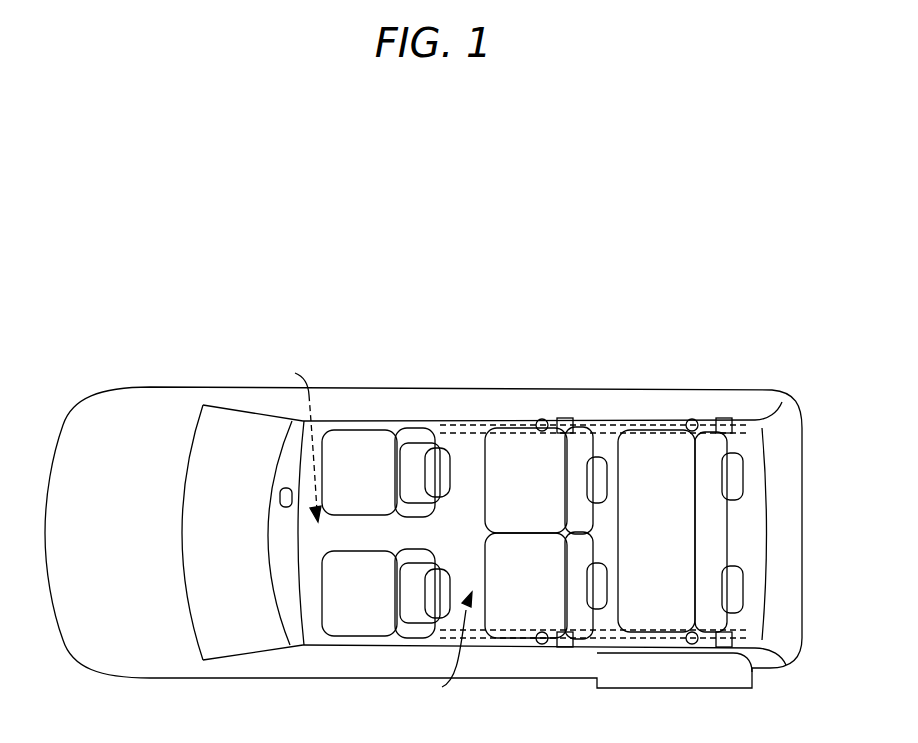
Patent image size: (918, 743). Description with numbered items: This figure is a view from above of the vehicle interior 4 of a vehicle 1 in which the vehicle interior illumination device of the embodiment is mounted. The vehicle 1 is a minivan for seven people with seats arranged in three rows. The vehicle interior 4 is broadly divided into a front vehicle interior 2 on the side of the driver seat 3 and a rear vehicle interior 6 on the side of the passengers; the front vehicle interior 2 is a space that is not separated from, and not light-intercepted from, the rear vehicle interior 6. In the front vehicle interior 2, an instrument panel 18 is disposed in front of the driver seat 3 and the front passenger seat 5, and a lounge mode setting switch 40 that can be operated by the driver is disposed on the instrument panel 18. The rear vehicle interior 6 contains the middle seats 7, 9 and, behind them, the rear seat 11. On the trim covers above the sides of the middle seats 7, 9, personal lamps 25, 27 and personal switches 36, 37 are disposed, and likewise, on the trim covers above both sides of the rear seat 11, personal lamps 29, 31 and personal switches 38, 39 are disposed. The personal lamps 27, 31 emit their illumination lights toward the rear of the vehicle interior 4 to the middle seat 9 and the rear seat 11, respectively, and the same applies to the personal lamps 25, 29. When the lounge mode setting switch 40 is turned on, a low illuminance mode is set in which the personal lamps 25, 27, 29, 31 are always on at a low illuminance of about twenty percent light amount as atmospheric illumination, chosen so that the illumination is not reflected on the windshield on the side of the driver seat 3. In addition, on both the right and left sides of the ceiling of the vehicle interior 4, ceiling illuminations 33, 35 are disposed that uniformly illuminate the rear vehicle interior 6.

The vehicle 1 is at (150, 397).
The front vehicle interior 2 is at (296, 438).
The driver seat 3 is at (362, 447).
The vehicle interior 4 is at (447, 537).
The front passenger seat 5 is at (365, 622).
The rear vehicle interior 6 is at (446, 652).
The middle seat 7 is at (503, 618).
The middle seat 9 is at (500, 455).
The rear seat 11 is at (710, 518).
The instrument panel 18 is at (286, 612).
The personal lamp 25 is at (545, 646).
The personal lamp 27 is at (545, 419).
The personal lamp 29 is at (692, 646).
The personal lamp 31 is at (694, 419).
The ceiling illumination 33 is at (478, 642).
The ceiling illumination 35 is at (448, 420).
The personal switch 36 is at (572, 648).
The personal switch 37 is at (568, 418).
The personal switch 38 is at (726, 647).
The personal switch 39 is at (728, 418).
The lounge mode setting switch 40 is at (280, 497).